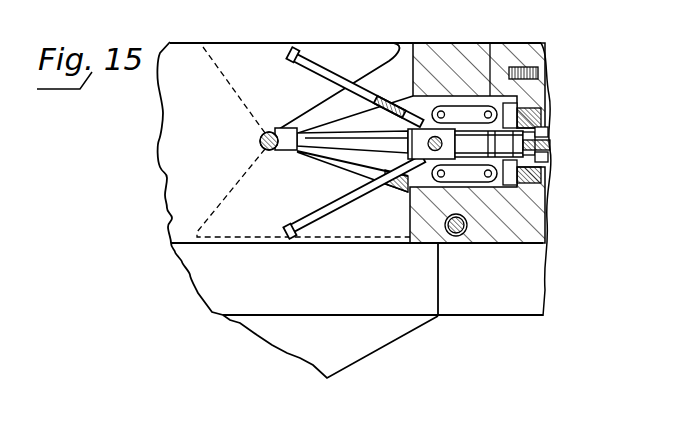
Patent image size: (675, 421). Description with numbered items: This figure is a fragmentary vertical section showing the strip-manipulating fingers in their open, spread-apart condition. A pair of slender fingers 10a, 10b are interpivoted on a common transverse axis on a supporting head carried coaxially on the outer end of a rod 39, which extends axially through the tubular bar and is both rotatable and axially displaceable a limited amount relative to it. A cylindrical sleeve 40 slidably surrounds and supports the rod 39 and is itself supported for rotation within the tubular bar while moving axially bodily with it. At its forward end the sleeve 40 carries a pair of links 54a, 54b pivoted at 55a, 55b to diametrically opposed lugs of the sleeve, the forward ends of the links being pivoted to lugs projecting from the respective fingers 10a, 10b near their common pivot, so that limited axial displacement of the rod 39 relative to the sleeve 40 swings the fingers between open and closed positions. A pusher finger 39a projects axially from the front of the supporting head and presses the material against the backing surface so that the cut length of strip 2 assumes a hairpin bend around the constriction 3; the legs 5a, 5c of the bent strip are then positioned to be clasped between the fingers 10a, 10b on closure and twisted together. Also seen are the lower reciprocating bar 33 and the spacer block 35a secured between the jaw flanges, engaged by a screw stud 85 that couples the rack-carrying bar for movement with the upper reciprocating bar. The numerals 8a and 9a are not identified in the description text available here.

The strip 2 is at (262, 137).
The constriction 3 is at (262, 143).
The leg of the strip 5a is at (305, 151).
The leg of the strip 5c is at (343, 110).
The arm 8a is at (368, 68).
The pivot axis 9a is at (233, 80).
The finger 10a is at (291, 52).
The finger 10b is at (283, 234).
The lower reciprocating bar 33 is at (545, 280).
The spacer block 35a is at (432, 72).
The rod 39 is at (551, 148).
The pusher finger 39a is at (368, 140).
The cylindrical sleeve 40 is at (550, 128).
The link 54a is at (465, 110).
The link 54b is at (467, 182).
The pivot 55a is at (490, 106).
The pivot 55b is at (503, 208).
The screw stud 85 is at (452, 236).